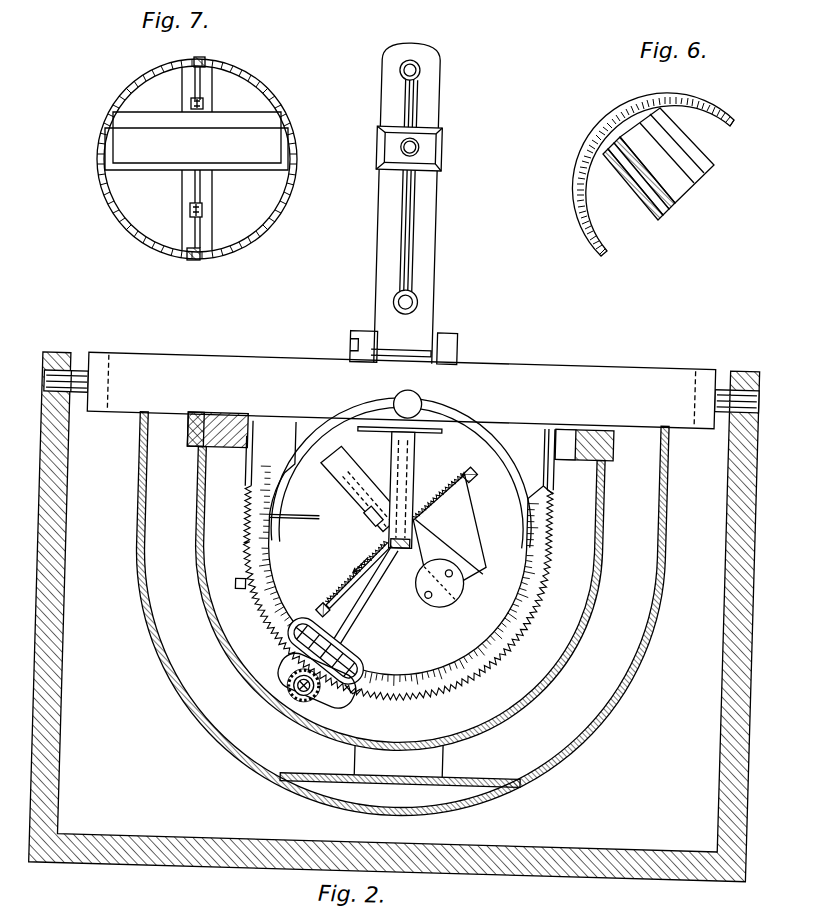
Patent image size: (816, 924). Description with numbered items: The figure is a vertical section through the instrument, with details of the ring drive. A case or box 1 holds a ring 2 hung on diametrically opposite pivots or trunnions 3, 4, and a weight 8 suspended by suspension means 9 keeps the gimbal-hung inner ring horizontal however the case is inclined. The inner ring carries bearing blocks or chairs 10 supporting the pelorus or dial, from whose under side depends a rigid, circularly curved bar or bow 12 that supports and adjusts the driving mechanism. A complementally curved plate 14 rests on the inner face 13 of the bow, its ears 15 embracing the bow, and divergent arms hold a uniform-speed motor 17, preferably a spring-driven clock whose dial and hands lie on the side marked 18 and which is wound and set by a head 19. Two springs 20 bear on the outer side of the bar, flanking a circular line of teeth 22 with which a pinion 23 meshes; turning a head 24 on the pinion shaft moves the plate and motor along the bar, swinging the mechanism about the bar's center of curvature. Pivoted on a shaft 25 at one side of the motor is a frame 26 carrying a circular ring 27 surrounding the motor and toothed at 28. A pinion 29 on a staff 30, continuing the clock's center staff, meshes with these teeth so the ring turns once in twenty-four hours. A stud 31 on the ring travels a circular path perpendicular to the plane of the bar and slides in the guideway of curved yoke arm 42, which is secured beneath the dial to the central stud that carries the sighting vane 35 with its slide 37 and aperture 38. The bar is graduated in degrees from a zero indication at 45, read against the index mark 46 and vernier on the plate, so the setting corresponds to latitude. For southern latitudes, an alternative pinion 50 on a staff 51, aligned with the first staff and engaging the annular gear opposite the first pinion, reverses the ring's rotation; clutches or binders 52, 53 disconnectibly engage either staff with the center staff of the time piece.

In FIG. 2, the case or box 1 is at (66, 759).
In FIG. 2, the ring 2 is at (193, 364).
In FIG. 2, the pivot or trunnion 3 is at (42, 380).
In FIG. 2, the pivot or trunnion 4 is at (757, 372).
In FIG. 2, the weight 8 is at (500, 786).
In FIG. 2, the suspension means 9 is at (664, 617).
In FIG. 2, the bearing blocks or chairs 10 is at (372, 590).
In FIG. 2, the bar or bow 12 is at (560, 572).
In FIG. 2, the inner face 13 is at (402, 507).
In FIG. 2, the plate 14 is at (400, 665).
In FIG. 2, the ears or lugs 15 is at (354, 694).
In FIG. 6, the motor 17 is at (662, 146).
In FIG. 2, the motor 17 is at (455, 548).
In FIG. 2, the clock dial and hands side 18 is at (404, 563).
In FIG. 2, the head 19 is at (452, 588).
In FIG. 2, the springs 20 is at (286, 664).
In FIG. 2, the teeth 22 is at (236, 588).
In FIG. 2, the pinion 23 is at (290, 697).
In FIG. 2, the head 24 is at (320, 699).
In FIG. 6, the shaft 25 is at (648, 180).
In FIG. 2, the shaft 25 is at (342, 470).
In FIG. 6, the frame 26 is at (716, 105).
In FIG. 2, the frame 26 is at (247, 514).
In FIG. 2, the circular ring 27 is at (354, 570).
In FIG. 7, the toothed edge or annular gear 28 is at (268, 228).
In FIG. 2, the toothed edge or annular gear 28 is at (318, 586).
In FIG. 7, the pinion 29 is at (206, 61).
In FIG. 2, the pinion 29 is at (470, 481).
In FIG. 7, the staff 30 is at (200, 85).
In FIG. 2, the staff 30 is at (552, 500).
In FIG. 2, the stud 31 is at (447, 523).
In FIG. 2, the vane 35 is at (423, 101).
In FIG. 2, the slide 37 is at (426, 157).
In FIG. 2, the aperture 38 is at (408, 143).
In FIG. 2, the yoke arm 42 is at (380, 512).
In FIG. 2, the zero indication 45 is at (442, 681).
In FIG. 2, the index mark 46 is at (340, 650).
In FIG. 7, the pinion 50 is at (203, 256).
In FIG. 2, the pinion 50 is at (318, 610).
In FIG. 7, the staff or shaft 51 is at (202, 225).
In FIG. 7, the clutch or binder 52 is at (212, 104).
In FIG. 7, the clutch or binder 53 is at (210, 207).